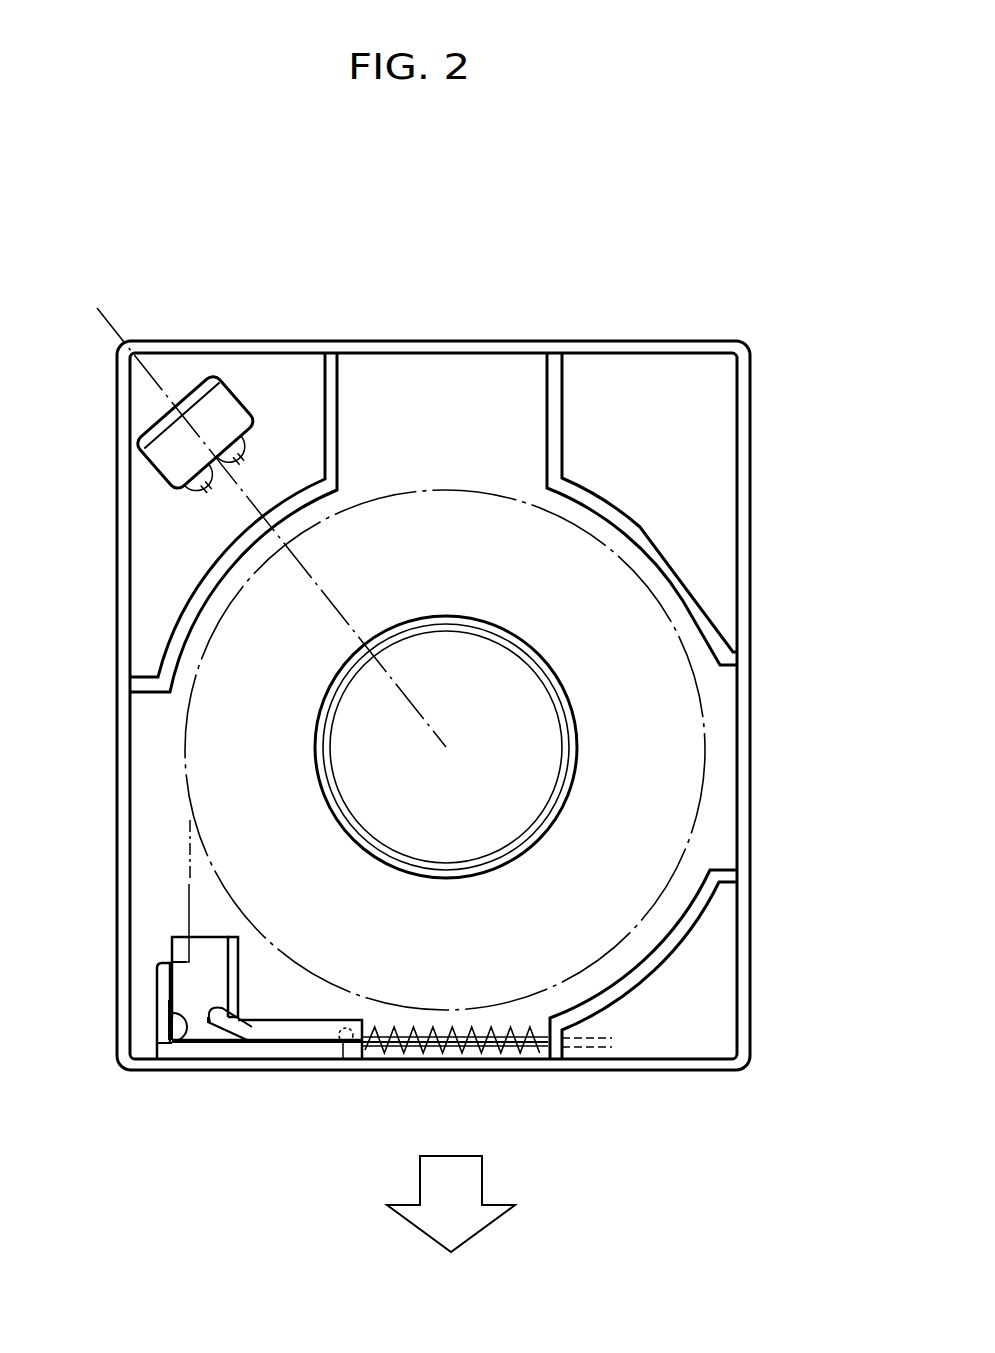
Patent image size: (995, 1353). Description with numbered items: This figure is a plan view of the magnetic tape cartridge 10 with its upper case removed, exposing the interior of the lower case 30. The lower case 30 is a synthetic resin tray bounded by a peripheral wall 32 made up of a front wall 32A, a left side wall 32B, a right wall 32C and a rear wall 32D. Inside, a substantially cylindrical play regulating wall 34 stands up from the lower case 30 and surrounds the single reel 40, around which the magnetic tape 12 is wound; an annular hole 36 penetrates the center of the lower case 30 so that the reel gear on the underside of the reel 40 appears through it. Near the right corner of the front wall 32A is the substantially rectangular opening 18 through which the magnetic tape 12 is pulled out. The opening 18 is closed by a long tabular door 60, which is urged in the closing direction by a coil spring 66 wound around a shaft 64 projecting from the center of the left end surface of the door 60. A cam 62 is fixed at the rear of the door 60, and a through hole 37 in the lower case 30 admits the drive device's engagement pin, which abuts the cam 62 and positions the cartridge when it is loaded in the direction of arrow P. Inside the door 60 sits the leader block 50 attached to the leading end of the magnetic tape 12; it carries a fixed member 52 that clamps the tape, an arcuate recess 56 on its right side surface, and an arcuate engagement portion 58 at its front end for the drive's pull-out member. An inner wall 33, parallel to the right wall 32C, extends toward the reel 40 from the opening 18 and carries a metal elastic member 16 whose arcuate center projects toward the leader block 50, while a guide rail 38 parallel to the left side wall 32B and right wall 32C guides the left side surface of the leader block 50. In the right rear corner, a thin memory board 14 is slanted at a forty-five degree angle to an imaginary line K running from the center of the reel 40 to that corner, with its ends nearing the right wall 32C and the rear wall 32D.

The magnetic tape cartridge 10 is at (727, 241).
The magnetic tape 12 is at (188, 898).
The memory board 14 is at (212, 409).
The metal elastic member 16 is at (170, 1020).
The opening 18 is at (189, 1065).
The lower case 30 is at (722, 335).
The peripheral wall 32 is at (752, 482).
The front wall 32A is at (588, 1072).
The left side wall 32B is at (751, 812).
The right wall 32C is at (117, 752).
The rear wall 32D is at (367, 343).
The inner wall 33 is at (158, 990).
The play regulating wall 34 is at (203, 580).
The annular hole 36 is at (490, 637).
The through hole 37 is at (343, 1062).
The guide rail 38 is at (242, 975).
The reel 40 is at (418, 489).
The leader block 50 is at (208, 948).
The fixed member 52 is at (172, 938).
The recess 56 is at (170, 1044).
The engagement portion 58 is at (250, 1042).
The door 60 is at (224, 1048).
The cam 62 is at (306, 1020).
The shaft 64 is at (458, 1046).
The coil spring 66 is at (406, 1052).
The imaginary line K is at (121, 328).
The arrow P is at (451, 1224).